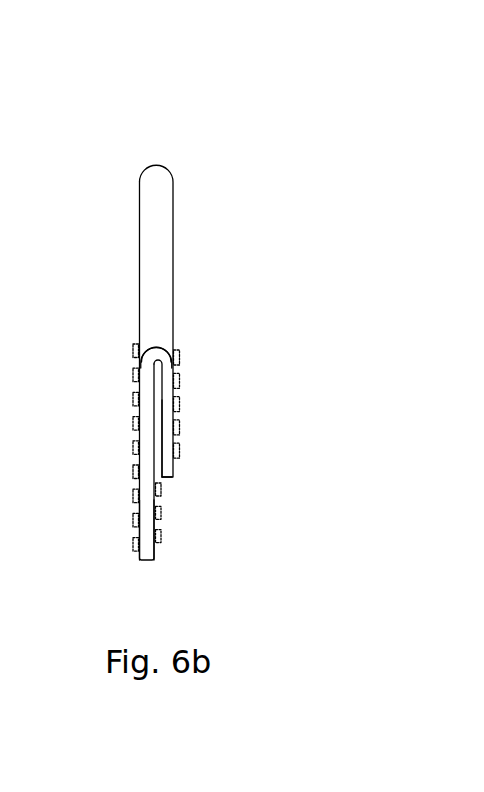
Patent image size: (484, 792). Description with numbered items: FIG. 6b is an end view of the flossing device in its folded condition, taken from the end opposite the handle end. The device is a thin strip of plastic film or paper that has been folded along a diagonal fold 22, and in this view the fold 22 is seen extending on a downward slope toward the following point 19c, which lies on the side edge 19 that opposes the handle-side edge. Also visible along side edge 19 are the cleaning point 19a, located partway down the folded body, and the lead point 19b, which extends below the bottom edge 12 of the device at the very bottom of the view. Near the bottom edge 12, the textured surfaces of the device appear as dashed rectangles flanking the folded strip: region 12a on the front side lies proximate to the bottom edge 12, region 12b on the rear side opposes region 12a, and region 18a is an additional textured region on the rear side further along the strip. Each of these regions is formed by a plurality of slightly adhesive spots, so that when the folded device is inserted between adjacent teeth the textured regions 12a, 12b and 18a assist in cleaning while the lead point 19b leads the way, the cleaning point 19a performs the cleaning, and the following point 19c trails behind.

The fold 22 is at (158, 231).
The side edge 19 is at (164, 389).
The cleaning point 19a is at (164, 480).
The lead point 19b is at (148, 562).
The following point 19c is at (152, 346).
The bottom edge 12 is at (214, 513).
The region 12a is at (98, 410).
The region 12b is at (238, 418).
The region 18a is at (98, 518).